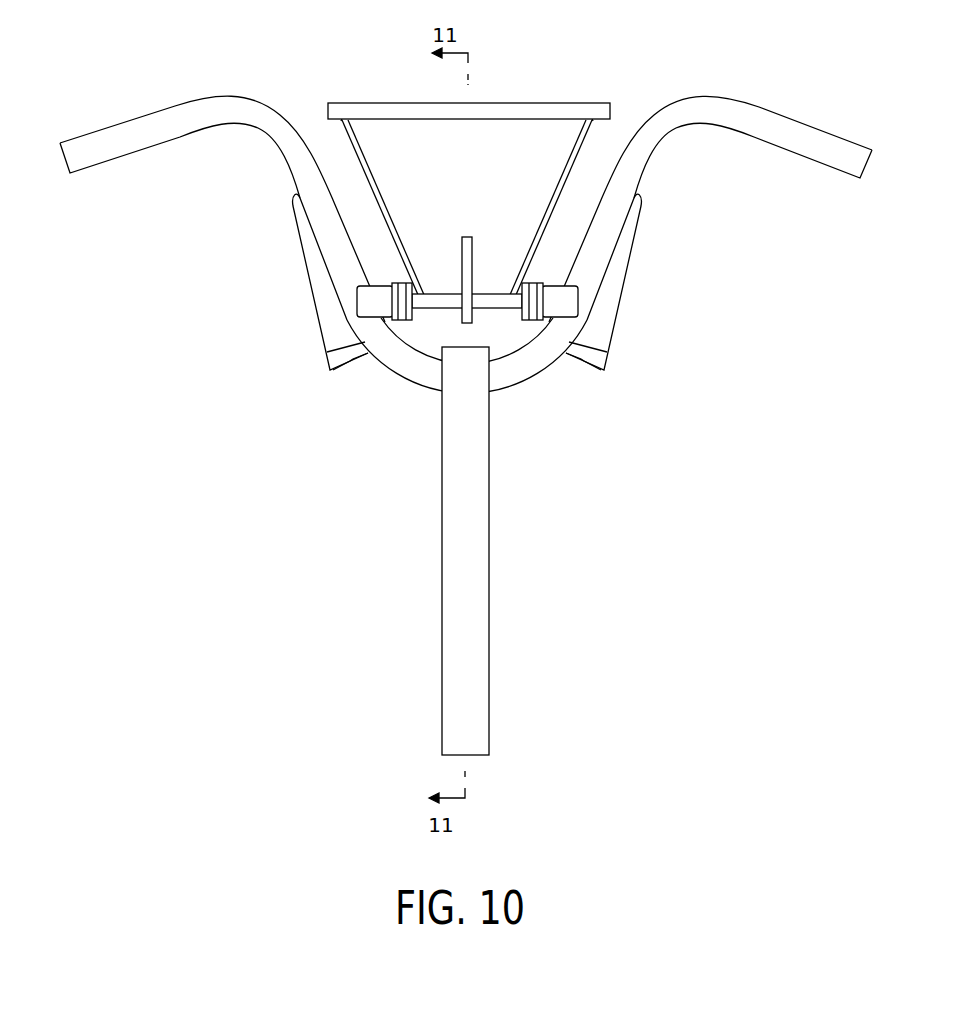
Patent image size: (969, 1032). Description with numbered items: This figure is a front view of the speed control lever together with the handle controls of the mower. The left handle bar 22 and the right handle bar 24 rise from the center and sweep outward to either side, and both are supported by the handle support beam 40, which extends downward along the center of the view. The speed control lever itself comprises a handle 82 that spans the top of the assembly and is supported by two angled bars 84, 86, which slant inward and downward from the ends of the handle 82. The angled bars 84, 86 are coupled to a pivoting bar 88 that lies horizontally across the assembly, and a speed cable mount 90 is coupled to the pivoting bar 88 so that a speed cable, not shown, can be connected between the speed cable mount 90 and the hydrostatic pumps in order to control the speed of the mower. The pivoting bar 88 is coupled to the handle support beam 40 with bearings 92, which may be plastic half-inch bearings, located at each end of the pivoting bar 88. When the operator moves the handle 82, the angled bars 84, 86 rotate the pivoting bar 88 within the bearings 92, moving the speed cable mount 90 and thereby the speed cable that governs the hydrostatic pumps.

The left handle bar 22 is at (118, 140).
The right handle bar 24 is at (815, 143).
The handle support beam 40 is at (473, 482).
The handle 82 is at (537, 102).
The angled bar 84 is at (348, 145).
The angled bar 86 is at (555, 190).
The pivoting bar 88 is at (488, 298).
The speed cable mount 90 is at (462, 252).
The bearings 92 is at (533, 318).